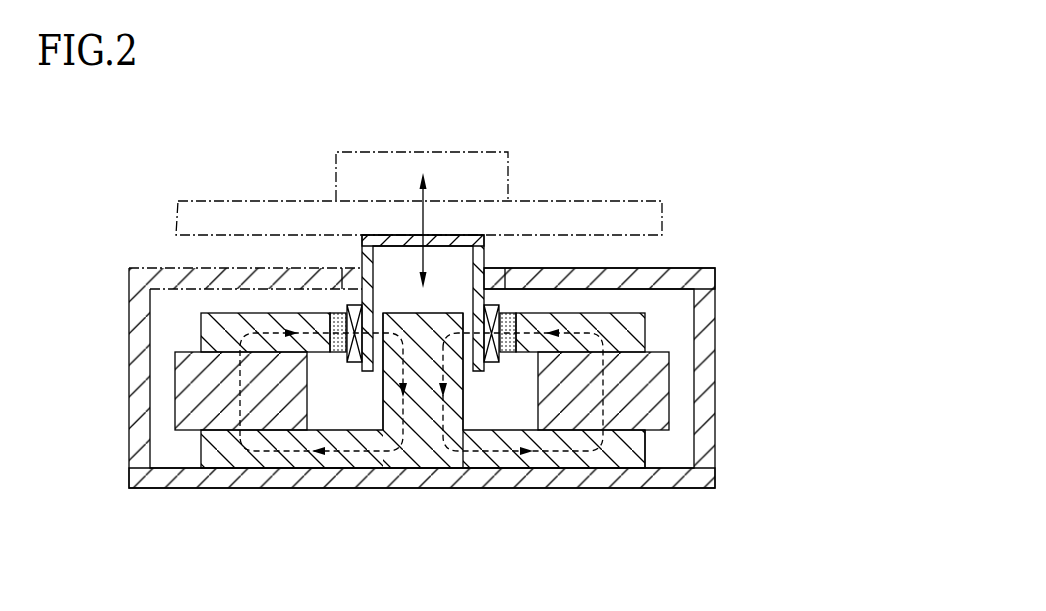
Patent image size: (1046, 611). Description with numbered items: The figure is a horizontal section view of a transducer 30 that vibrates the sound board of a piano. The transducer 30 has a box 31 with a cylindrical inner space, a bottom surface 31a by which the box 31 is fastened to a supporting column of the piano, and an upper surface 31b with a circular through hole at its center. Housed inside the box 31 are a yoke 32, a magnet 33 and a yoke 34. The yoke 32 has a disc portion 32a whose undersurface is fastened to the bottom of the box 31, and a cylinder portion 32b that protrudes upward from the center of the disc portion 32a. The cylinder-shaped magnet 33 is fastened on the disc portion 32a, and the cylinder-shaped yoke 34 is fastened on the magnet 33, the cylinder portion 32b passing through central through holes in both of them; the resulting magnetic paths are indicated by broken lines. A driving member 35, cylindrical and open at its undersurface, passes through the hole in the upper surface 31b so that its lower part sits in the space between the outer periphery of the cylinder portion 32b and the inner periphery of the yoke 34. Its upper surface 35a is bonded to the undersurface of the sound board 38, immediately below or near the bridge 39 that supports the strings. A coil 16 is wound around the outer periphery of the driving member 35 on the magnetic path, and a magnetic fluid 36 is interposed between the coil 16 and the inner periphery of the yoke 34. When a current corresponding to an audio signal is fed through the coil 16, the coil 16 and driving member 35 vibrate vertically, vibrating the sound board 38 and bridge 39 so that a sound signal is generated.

The transducer 30 is at (736, 243).
The box 31 is at (715, 430).
The bottom surface 31a is at (683, 488).
The upper surface 31b is at (683, 268).
The yoke 32 is at (645, 458).
The disc portion 32a is at (607, 457).
The cylinder portion 32b is at (383, 408).
The magnet 33 is at (669, 388).
The yoke 34 is at (645, 331).
The driving member 35 is at (362, 250).
The upper surface 35a is at (459, 235).
The magnetic fluid 36 is at (510, 314).
The coil 16 is at (491, 316).
The sound board 38 is at (612, 199).
The bridge 39 is at (512, 168).